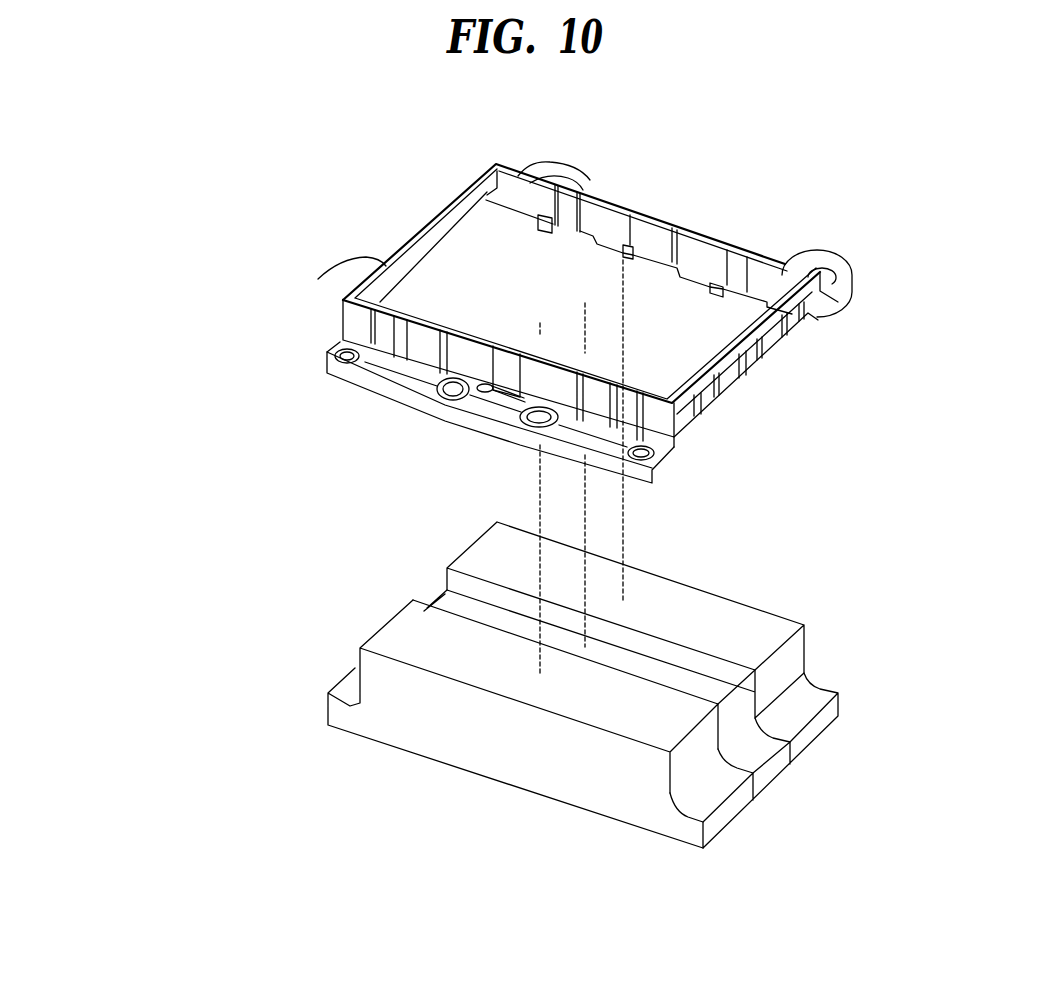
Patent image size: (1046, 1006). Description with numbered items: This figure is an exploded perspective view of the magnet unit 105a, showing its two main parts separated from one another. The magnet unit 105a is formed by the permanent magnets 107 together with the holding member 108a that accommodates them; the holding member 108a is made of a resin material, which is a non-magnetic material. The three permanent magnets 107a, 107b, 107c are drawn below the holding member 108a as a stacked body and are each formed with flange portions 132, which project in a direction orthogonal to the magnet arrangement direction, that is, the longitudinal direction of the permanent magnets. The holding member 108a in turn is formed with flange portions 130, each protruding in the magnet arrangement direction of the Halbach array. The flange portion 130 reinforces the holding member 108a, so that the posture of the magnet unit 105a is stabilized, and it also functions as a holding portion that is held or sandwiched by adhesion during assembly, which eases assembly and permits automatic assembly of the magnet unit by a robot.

The magnet unit 105a is at (163, 296).
The holding member 108a is at (378, 263).
The permanent magnet 107 is at (252, 408).
The permanent magnet 107a is at (416, 628).
The permanent magnet 107b is at (452, 603).
The permanent magnet 107c is at (503, 548).
The flange portion 130 is at (493, 402).
The flange portion 132 is at (730, 810).